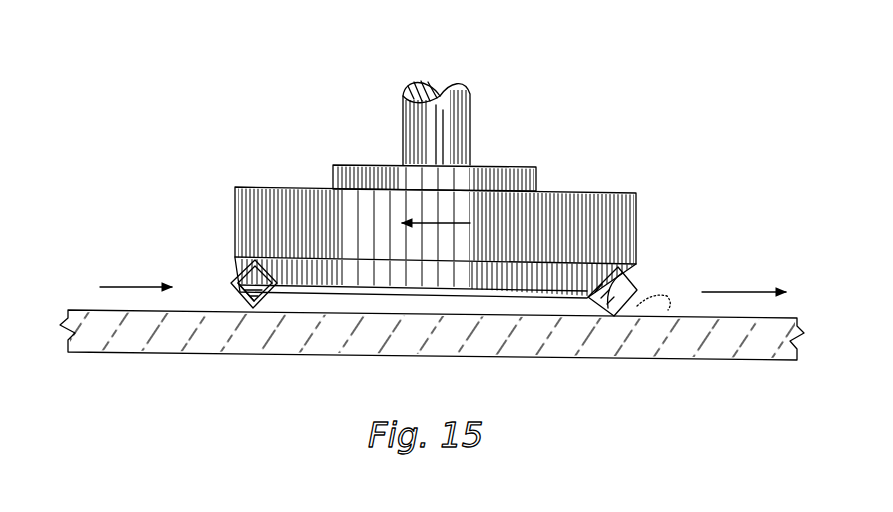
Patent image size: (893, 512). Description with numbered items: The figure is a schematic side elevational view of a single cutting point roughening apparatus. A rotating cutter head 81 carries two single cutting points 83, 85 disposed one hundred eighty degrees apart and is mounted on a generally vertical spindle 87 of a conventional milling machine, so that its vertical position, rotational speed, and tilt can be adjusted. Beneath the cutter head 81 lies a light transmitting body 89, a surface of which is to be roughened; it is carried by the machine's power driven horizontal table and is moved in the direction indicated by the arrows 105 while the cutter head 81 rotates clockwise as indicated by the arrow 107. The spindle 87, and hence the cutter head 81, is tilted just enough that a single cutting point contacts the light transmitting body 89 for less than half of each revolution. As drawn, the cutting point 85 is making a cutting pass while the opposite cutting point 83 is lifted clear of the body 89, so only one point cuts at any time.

The rotating cutter head 81 is at (258, 166).
The single cutting point 83 is at (242, 302).
The single cutting point 85 is at (637, 278).
The generally vertical spindle 87 is at (403, 128).
The light transmitting body 89 is at (245, 357).
The arrows indicating direction of movement 105 is at (130, 286).
The arrow indicating clockwise rotation 107 is at (444, 226).